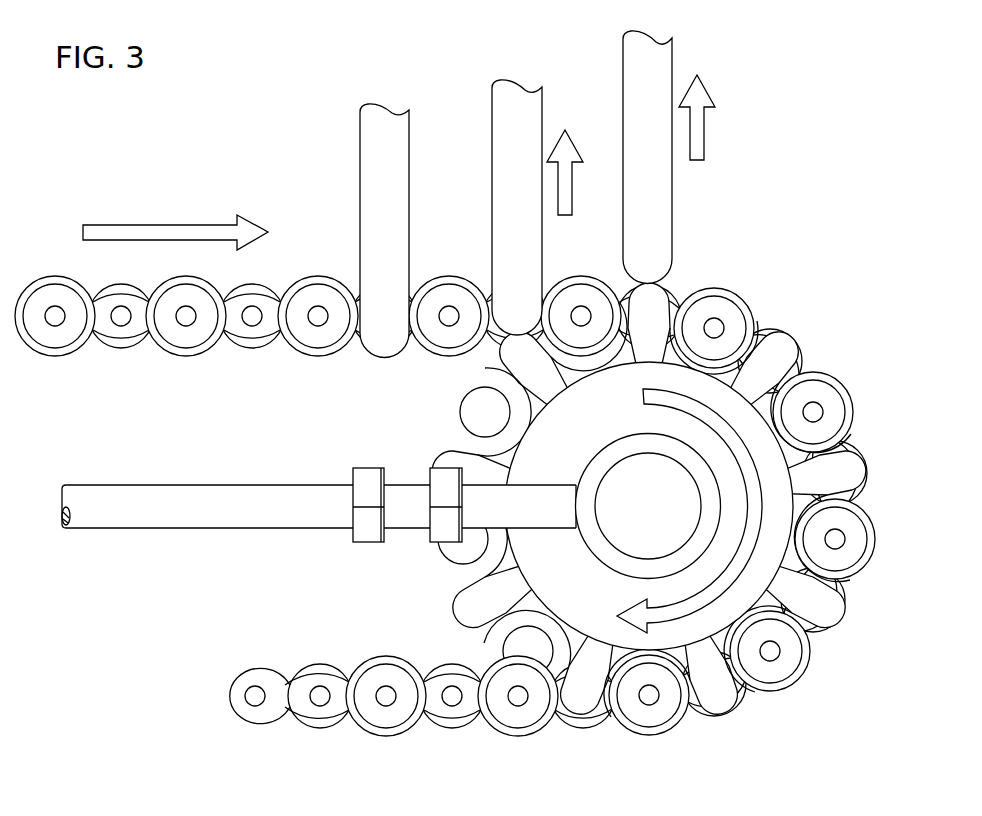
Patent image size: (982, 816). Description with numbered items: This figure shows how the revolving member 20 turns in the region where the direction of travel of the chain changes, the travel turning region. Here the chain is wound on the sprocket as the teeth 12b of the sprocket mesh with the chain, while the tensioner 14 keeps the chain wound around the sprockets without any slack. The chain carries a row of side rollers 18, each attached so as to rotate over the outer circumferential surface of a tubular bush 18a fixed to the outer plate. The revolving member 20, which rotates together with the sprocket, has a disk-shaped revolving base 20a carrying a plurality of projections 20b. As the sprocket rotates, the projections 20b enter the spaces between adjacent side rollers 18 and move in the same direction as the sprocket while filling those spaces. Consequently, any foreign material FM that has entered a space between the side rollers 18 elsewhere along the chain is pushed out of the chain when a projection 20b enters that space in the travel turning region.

The teeth 12b is at (458, 438).
The tensioner 14 is at (156, 516).
The side roller 18 is at (496, 506).
The tubular bush 18a is at (835, 405).
The revolving member 20 is at (683, 500).
The revolving base 20a is at (781, 517).
The projections 20b is at (852, 468).
The foreign material FM is at (369, 156).